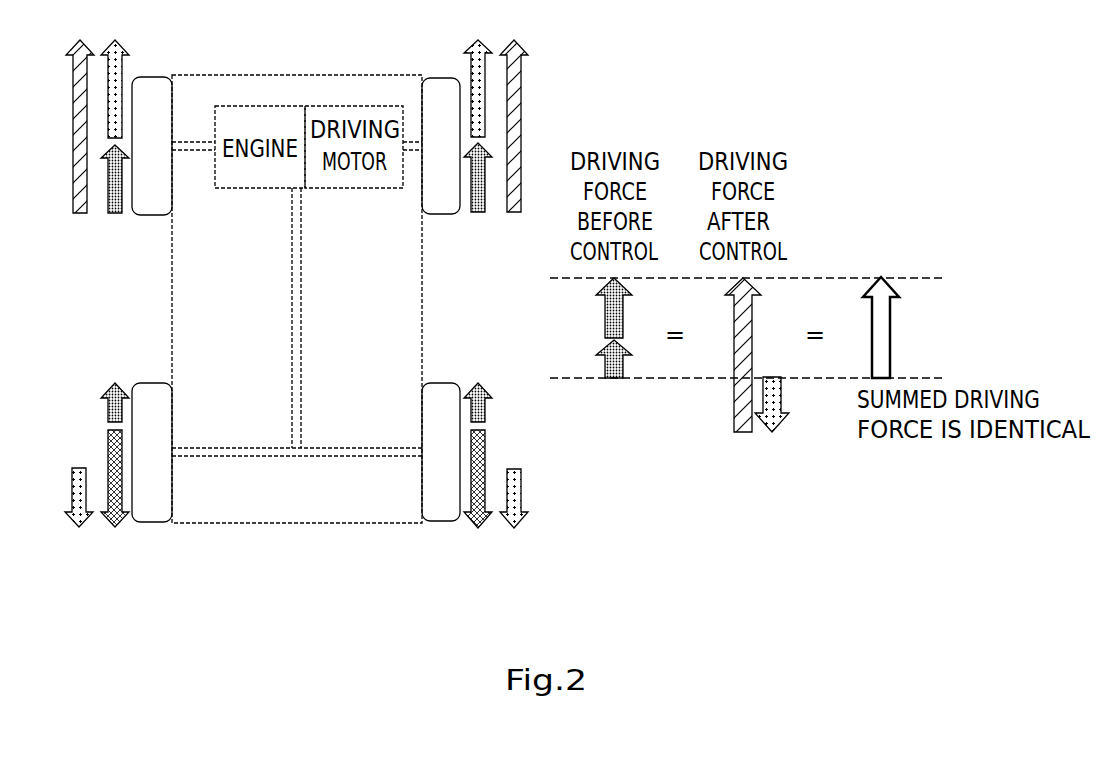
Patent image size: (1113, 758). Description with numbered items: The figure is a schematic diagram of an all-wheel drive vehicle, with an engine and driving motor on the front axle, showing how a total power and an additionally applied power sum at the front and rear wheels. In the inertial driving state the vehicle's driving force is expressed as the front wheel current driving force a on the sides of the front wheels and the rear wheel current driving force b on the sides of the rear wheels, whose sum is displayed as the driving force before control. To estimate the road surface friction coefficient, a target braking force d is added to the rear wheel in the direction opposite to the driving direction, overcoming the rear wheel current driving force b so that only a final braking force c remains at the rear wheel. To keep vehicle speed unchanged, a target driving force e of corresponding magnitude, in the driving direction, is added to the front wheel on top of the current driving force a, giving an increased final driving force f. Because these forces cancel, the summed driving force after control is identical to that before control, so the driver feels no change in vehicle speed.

The front wheel current driving force arrow a is at (478, 213).
The rear wheel current driving force arrow b is at (480, 396).
The final braking force arrow c is at (513, 487).
The target braking force arrow d is at (475, 523).
The target driving force arrow e is at (478, 50).
The final driving force arrow f is at (513, 82).